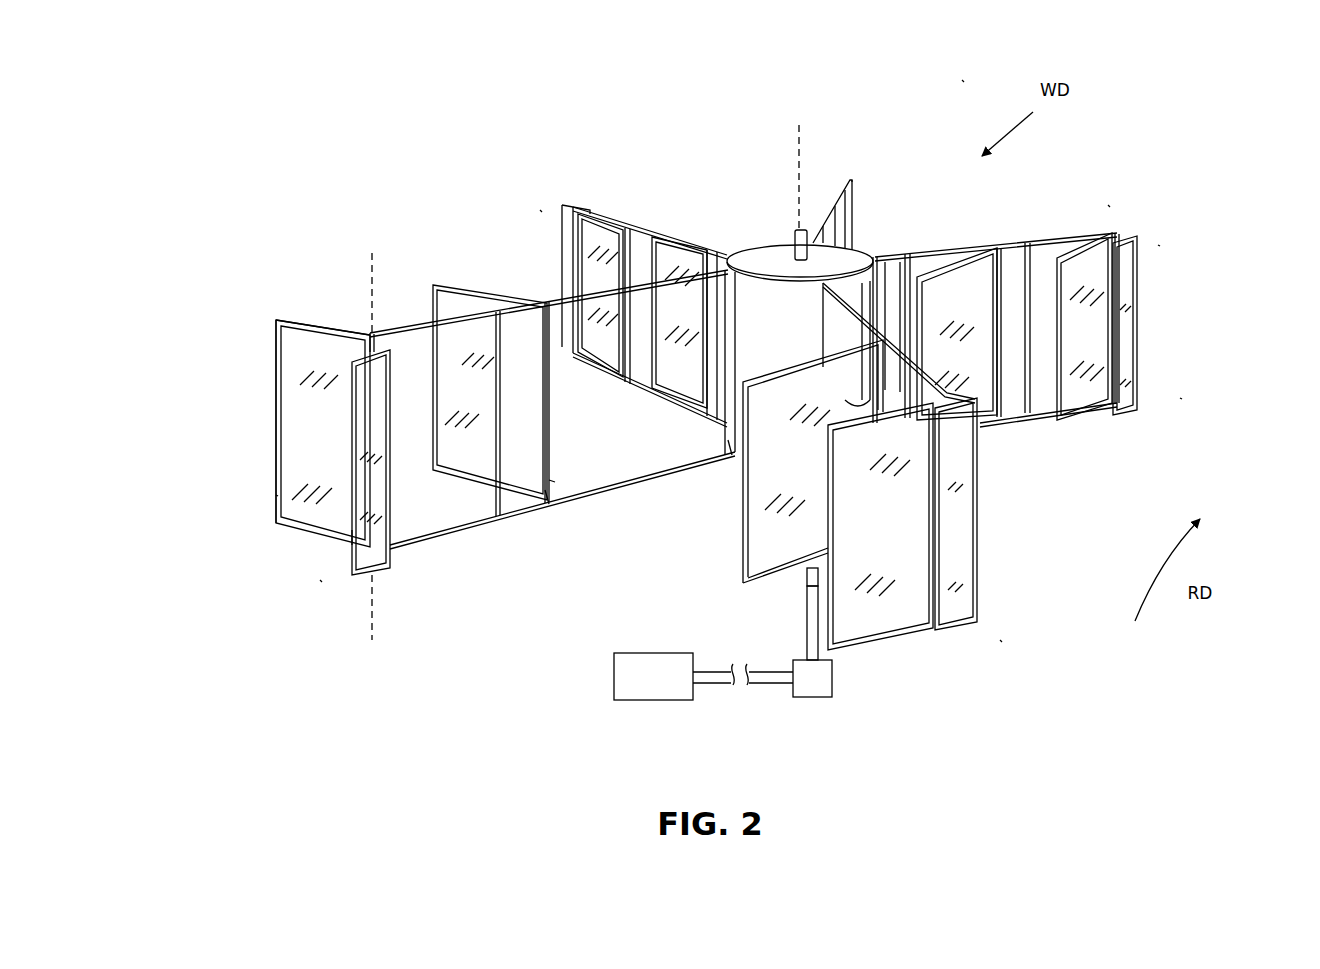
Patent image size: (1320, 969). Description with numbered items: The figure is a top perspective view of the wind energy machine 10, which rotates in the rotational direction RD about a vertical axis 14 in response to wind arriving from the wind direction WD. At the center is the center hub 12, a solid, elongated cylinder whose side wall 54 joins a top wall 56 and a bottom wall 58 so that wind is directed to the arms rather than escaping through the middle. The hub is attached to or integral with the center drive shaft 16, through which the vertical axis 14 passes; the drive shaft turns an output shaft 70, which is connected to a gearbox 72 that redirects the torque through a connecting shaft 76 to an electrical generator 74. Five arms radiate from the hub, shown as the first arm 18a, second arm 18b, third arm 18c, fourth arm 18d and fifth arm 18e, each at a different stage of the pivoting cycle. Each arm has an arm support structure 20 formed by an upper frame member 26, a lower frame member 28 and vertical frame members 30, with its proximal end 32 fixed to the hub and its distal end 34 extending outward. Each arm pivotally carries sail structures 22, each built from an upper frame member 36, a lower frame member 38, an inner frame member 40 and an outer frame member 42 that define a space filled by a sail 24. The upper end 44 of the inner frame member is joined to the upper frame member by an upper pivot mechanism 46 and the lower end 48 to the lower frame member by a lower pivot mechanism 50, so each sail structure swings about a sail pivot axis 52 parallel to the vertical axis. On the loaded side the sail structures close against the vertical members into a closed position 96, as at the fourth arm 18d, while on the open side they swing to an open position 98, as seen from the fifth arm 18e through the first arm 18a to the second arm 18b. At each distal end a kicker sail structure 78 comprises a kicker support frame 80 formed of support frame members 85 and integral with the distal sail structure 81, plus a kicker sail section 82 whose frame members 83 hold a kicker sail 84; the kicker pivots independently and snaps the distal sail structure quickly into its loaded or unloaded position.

The wind energy machine 10 is at (962, 80).
The center hub 12 is at (858, 250).
The vertical axis 14 is at (797, 152).
The center drive shaft 16 is at (795, 242).
The arm support structure 20 is at (645, 226).
The sail structure 22 is at (467, 285).
The sail 24 is at (296, 432).
The upper frame member 26 is at (1055, 239).
The lower frame member 28 is at (1040, 431).
The vertical frame member 30 is at (1025, 267).
The proximal end 32 is at (878, 256).
The distal end 34 is at (381, 574).
The upper frame member 36 is at (333, 323).
The lower frame member 38 is at (478, 513).
The inner frame member 40 is at (552, 385).
The outer frame member 42 is at (276, 351).
The upper end 44 is at (545, 300).
The upper pivot mechanism 46 is at (385, 346).
The lower end 48 is at (548, 506).
The lower pivot mechanism 50 is at (553, 483).
The sail pivot axis 52 is at (378, 280).
The side wall 54 is at (765, 353).
The top wall 56 is at (752, 255).
The bottom wall 58 is at (737, 458).
The output shaft 70 is at (807, 633).
The gearbox 72 is at (833, 681).
The electrical generator 74 is at (614, 682).
The connecting shaft 76 is at (707, 691).
The kicker sail structure 78 is at (1158, 245).
The kicker support frame 80 is at (1128, 421).
The distal sail structure 81 is at (275, 496).
The kicker sail section 82 is at (1126, 331).
The frame members 83 is at (351, 539).
The kicker sail 84 is at (960, 531).
The support frame members 85 is at (1127, 238).
The closed position 96 is at (603, 208).
The open position 98 is at (1108, 205).
The first arm 18a is at (1000, 641).
The second arm 18b is at (1180, 399).
The third arm 18c is at (855, 178).
The fourth arm 18d is at (540, 210).
The fifth arm 18e is at (320, 581).